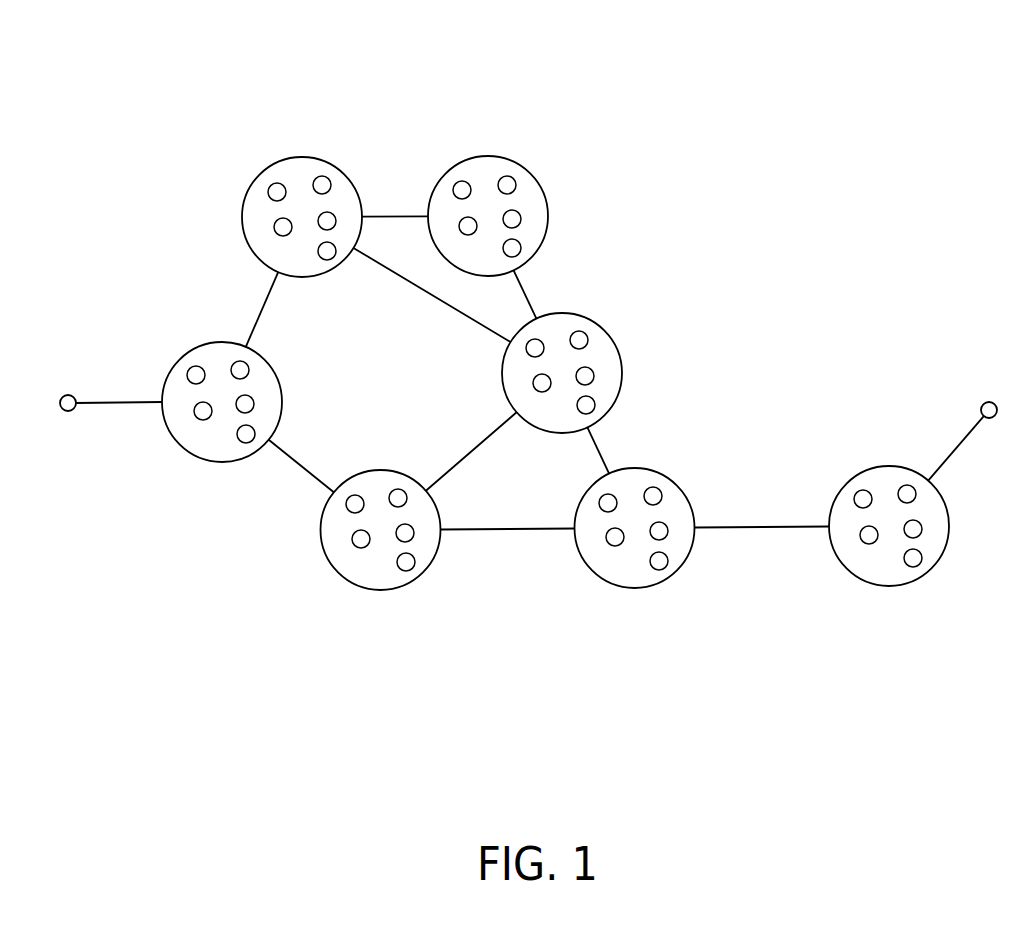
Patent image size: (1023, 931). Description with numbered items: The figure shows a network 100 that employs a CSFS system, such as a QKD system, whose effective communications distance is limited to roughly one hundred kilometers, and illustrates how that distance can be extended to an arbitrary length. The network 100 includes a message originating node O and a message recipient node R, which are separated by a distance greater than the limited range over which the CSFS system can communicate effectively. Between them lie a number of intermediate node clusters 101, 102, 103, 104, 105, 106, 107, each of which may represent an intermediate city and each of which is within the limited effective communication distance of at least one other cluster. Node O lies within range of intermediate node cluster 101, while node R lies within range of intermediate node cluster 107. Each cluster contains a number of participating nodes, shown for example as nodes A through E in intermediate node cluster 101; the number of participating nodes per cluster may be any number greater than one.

The network 100 is at (58, 78).
The intermediate node cluster 101 is at (165, 376).
The intermediate node cluster 102 is at (250, 192).
The intermediate node cluster 103 is at (320, 529).
The intermediate node cluster 104 is at (430, 190).
The intermediate node cluster 105 is at (501, 372).
The intermediate node cluster 106 is at (580, 503).
The intermediate node cluster 107 is at (833, 500).